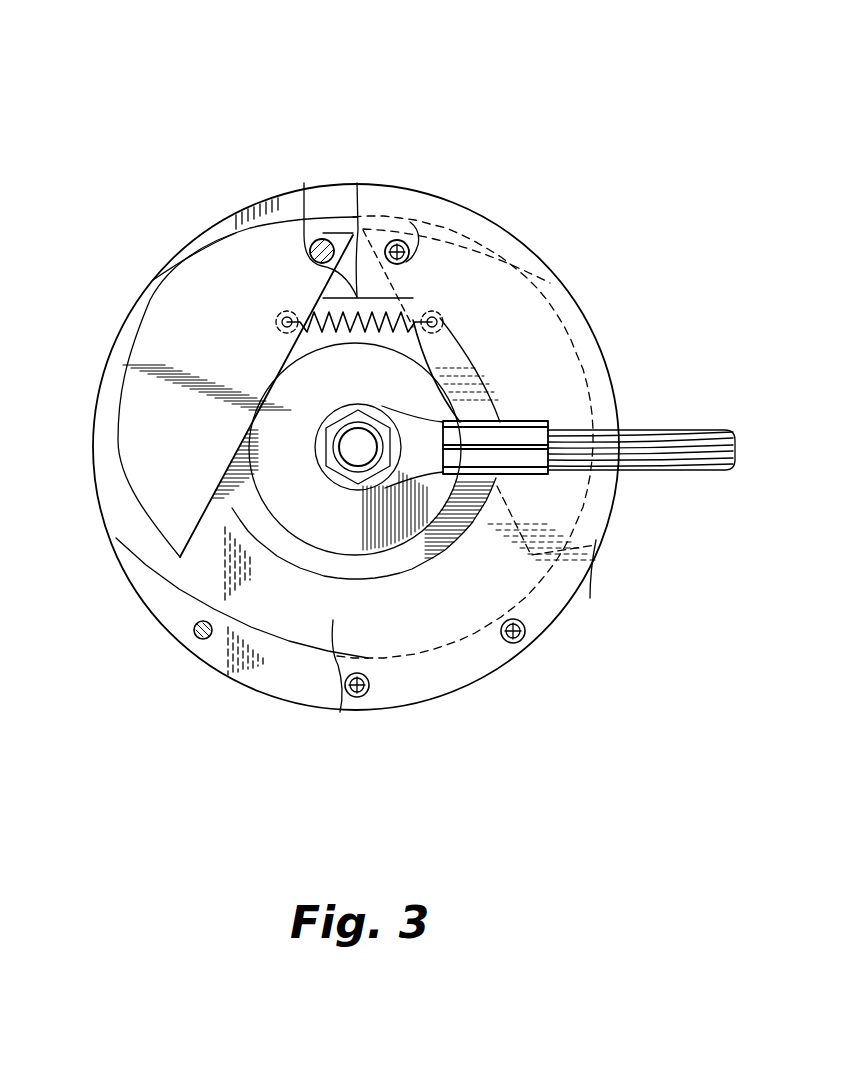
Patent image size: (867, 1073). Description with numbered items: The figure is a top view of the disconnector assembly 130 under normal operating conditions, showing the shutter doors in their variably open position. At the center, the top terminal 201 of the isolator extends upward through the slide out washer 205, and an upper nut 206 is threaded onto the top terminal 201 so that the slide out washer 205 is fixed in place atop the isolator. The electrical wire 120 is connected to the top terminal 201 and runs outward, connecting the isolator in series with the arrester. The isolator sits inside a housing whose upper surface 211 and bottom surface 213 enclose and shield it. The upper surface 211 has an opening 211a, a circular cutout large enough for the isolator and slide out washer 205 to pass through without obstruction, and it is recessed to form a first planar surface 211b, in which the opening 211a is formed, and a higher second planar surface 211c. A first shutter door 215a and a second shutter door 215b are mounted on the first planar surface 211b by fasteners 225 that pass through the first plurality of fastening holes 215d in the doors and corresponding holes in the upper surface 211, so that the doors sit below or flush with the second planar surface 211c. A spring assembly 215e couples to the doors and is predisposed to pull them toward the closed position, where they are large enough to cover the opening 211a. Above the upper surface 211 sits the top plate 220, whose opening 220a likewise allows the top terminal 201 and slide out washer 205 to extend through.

The disconnector assembly 130 is at (137, 178).
The electrical wire 120 is at (707, 430).
The top terminal 201 is at (371, 425).
The slide out washer 205 is at (297, 415).
The upper nut 206 is at (341, 487).
The upper surface 211 is at (127, 520).
The opening 211a is at (306, 575).
The first planar surface 211b is at (190, 573).
The second planar surface 211c is at (278, 670).
The bottom surface 213 is at (334, 563).
The first shutter door 215a is at (467, 403).
The second shutter door 215b is at (160, 350).
The first plurality of fastening holes 215d is at (310, 242).
The spring assembly 215e is at (348, 315).
The top plate 220 is at (433, 653).
The opening 220a is at (390, 573).
The fasteners 225 is at (199, 640).